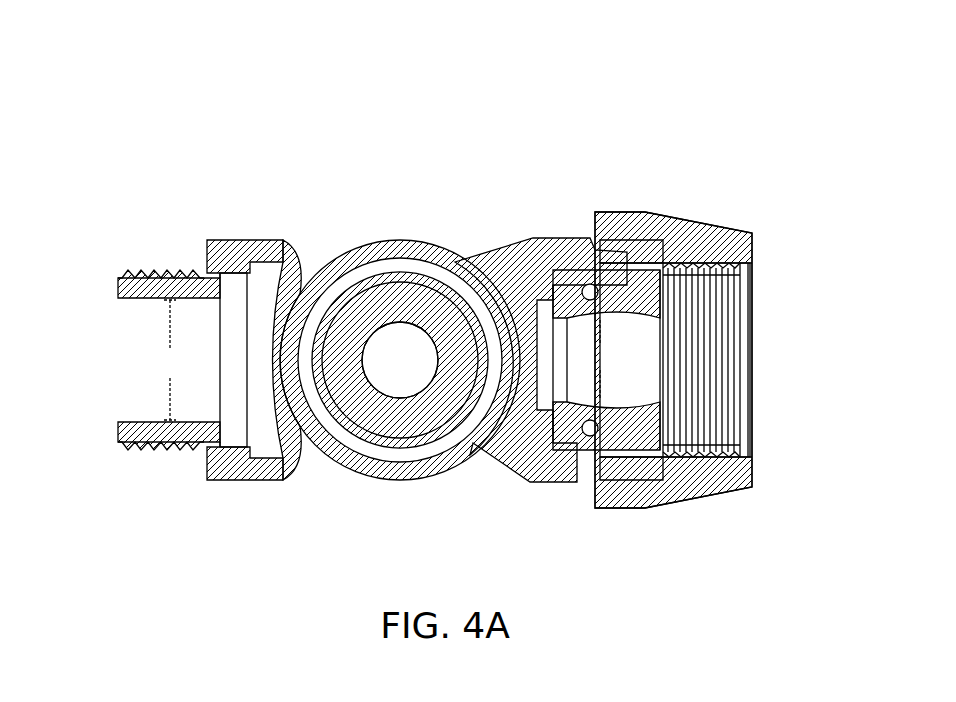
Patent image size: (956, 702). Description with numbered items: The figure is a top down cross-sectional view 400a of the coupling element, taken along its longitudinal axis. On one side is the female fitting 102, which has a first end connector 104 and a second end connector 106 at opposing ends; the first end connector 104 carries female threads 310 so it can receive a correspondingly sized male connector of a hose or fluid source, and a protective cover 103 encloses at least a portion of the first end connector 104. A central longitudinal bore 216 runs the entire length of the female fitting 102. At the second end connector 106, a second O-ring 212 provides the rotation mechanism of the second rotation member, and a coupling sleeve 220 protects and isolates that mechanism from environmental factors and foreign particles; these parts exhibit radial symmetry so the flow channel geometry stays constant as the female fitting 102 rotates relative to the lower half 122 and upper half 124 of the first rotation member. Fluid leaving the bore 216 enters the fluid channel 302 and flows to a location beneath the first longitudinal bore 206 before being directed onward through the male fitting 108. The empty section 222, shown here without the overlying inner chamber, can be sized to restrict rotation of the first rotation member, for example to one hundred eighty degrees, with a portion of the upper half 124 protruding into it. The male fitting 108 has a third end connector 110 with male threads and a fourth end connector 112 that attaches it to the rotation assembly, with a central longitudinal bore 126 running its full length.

The top down cross-sectional view 400a is at (82, 62).
The male fitting 108 is at (125, 392).
The third end connector 110 is at (118, 270).
The central longitudinal bore 126 is at (176, 360).
The fourth end connector 112 is at (197, 266).
The lower half 122 is at (315, 468).
The empty section 222 is at (371, 472).
The upper half 124 is at (362, 250).
The first longitudinal bore 206 is at (438, 360).
The fluid channel 302 is at (500, 448).
The second O-ring 212 is at (563, 240).
The central longitudinal bore 216 is at (606, 360).
The coupling sleeve 220 is at (597, 470).
The protective cover 103 is at (687, 222).
The female fitting 102 is at (745, 390).
The first end connector 104 is at (733, 322).
The female threads 310 is at (740, 418).
The second end connector 106 is at (667, 497).